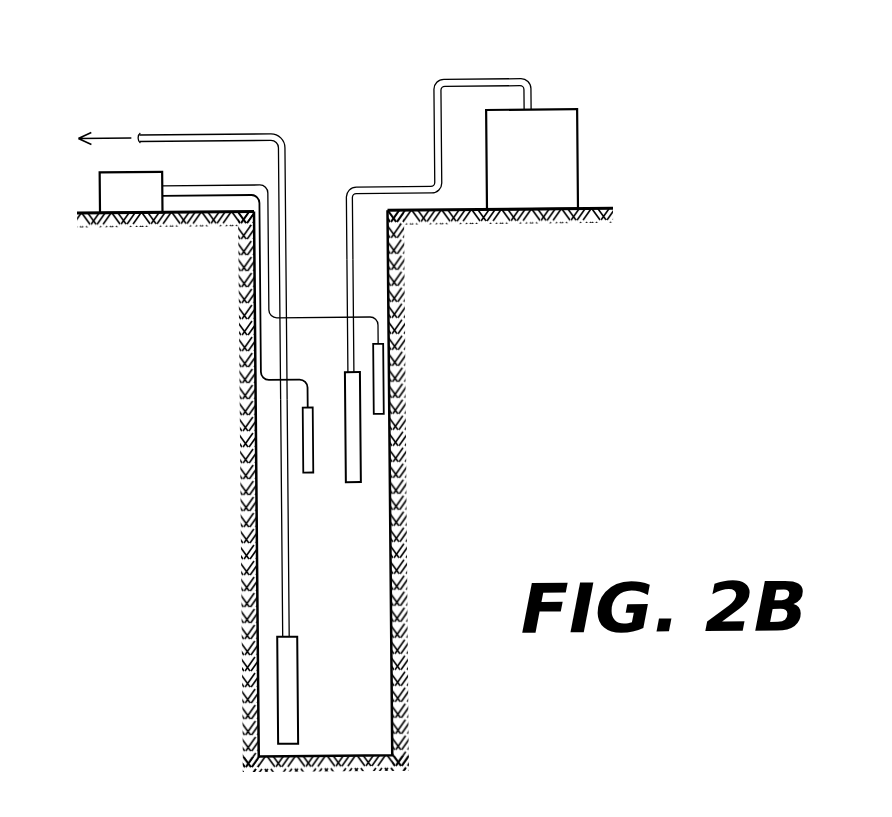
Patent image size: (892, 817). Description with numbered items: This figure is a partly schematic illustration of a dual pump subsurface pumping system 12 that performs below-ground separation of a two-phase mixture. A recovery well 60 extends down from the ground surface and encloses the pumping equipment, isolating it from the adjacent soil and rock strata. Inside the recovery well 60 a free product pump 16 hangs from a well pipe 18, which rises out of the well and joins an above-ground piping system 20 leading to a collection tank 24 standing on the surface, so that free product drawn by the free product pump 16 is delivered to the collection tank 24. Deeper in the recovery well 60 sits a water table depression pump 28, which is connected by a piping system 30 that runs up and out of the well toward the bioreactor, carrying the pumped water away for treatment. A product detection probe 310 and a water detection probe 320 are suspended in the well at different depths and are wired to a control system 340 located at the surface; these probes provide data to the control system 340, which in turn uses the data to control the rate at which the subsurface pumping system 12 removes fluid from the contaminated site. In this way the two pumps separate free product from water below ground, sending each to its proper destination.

The subsurface pumping system 12 is at (373, 65).
The free product pump 16 is at (344, 392).
The well pipe 18 is at (346, 270).
The above-ground piping system 20 is at (382, 188).
The collection tank 24 is at (544, 170).
The water table depression pump 28 is at (294, 690).
The piping system 30 is at (233, 134).
The recovery well 60 is at (345, 639).
The product detection probe 310 is at (382, 367).
The water detection probe 320 is at (306, 473).
The control system 340 is at (148, 202).